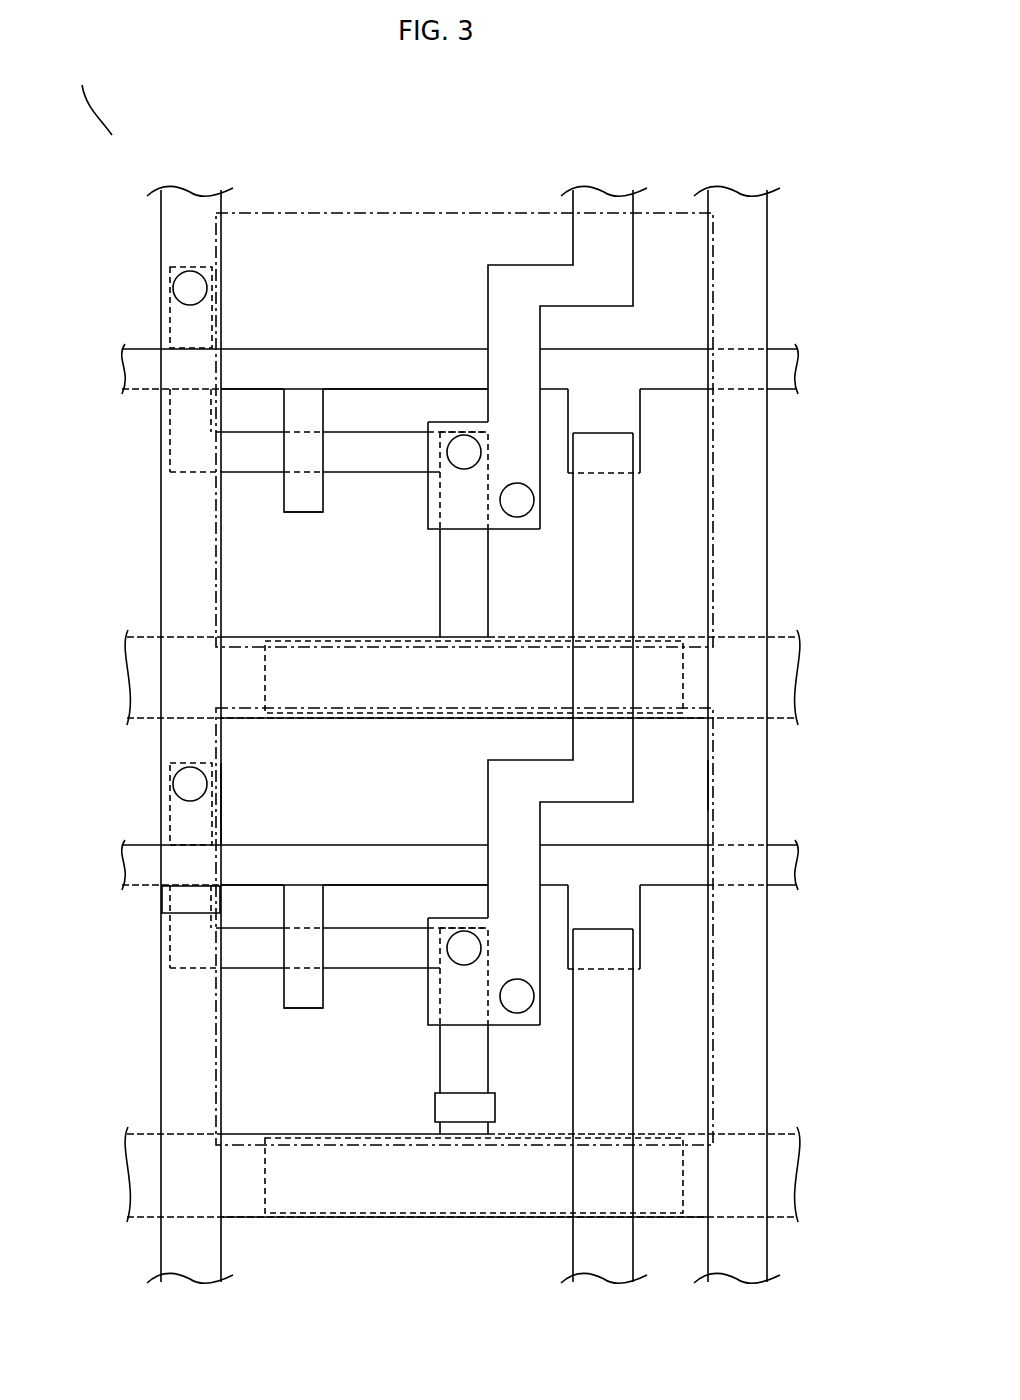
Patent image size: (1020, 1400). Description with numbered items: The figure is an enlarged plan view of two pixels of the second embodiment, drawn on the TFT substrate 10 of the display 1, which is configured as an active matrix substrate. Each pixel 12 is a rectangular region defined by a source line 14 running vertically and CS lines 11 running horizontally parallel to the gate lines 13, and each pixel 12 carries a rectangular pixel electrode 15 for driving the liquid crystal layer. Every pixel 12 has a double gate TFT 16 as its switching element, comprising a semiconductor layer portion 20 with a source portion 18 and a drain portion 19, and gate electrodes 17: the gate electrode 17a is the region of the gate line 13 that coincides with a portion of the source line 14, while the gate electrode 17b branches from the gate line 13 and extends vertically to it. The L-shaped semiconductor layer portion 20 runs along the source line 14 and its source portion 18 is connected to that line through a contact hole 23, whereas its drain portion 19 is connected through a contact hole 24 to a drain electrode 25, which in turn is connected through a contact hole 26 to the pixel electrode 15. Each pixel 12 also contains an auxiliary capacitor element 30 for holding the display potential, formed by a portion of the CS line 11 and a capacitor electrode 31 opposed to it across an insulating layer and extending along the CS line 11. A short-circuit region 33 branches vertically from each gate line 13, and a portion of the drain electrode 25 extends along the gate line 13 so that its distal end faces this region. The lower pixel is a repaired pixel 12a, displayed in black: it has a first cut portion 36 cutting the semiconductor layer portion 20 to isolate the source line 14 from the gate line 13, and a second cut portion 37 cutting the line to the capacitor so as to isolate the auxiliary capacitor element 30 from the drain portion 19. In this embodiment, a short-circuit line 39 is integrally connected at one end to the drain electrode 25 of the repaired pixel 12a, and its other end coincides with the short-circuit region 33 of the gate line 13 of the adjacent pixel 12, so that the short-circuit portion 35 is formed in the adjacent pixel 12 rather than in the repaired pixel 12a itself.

The active matrix substrate 1 is at (116, 122).
The TFT substrate 10 is at (97, 110).
The CS line 11 is at (125, 668).
The pixel 12 is at (680, 287).
The repaired pixel 12a is at (673, 783).
The gate line 13 is at (122, 375).
The source line 14 is at (185, 208).
The pixel electrode 15 is at (382, 210).
The TFT 16 is at (146, 489).
The gate electrode 17 is at (303, 698).
The gate electrode 17a is at (188, 372).
The gate electrode 17b is at (302, 451).
The source portion 18 is at (180, 810).
The drain portion 19 is at (392, 455).
The semiconductor layer portion 20 is at (359, 489).
The contact hole 23 is at (180, 290).
The contact hole 24 is at (458, 452).
The drain electrode 25 is at (517, 443).
The contact hole 26 is at (518, 508).
The auxiliary capacitor element 30 is at (472, 727).
The capacitor electrode 31 is at (388, 700).
The short-circuit region 33 is at (615, 463).
The short-circuit portion 35 is at (615, 447).
The first cut portion 36 is at (168, 903).
The second cut portion 37 is at (482, 1108).
The short-circuit line 39 is at (602, 200).